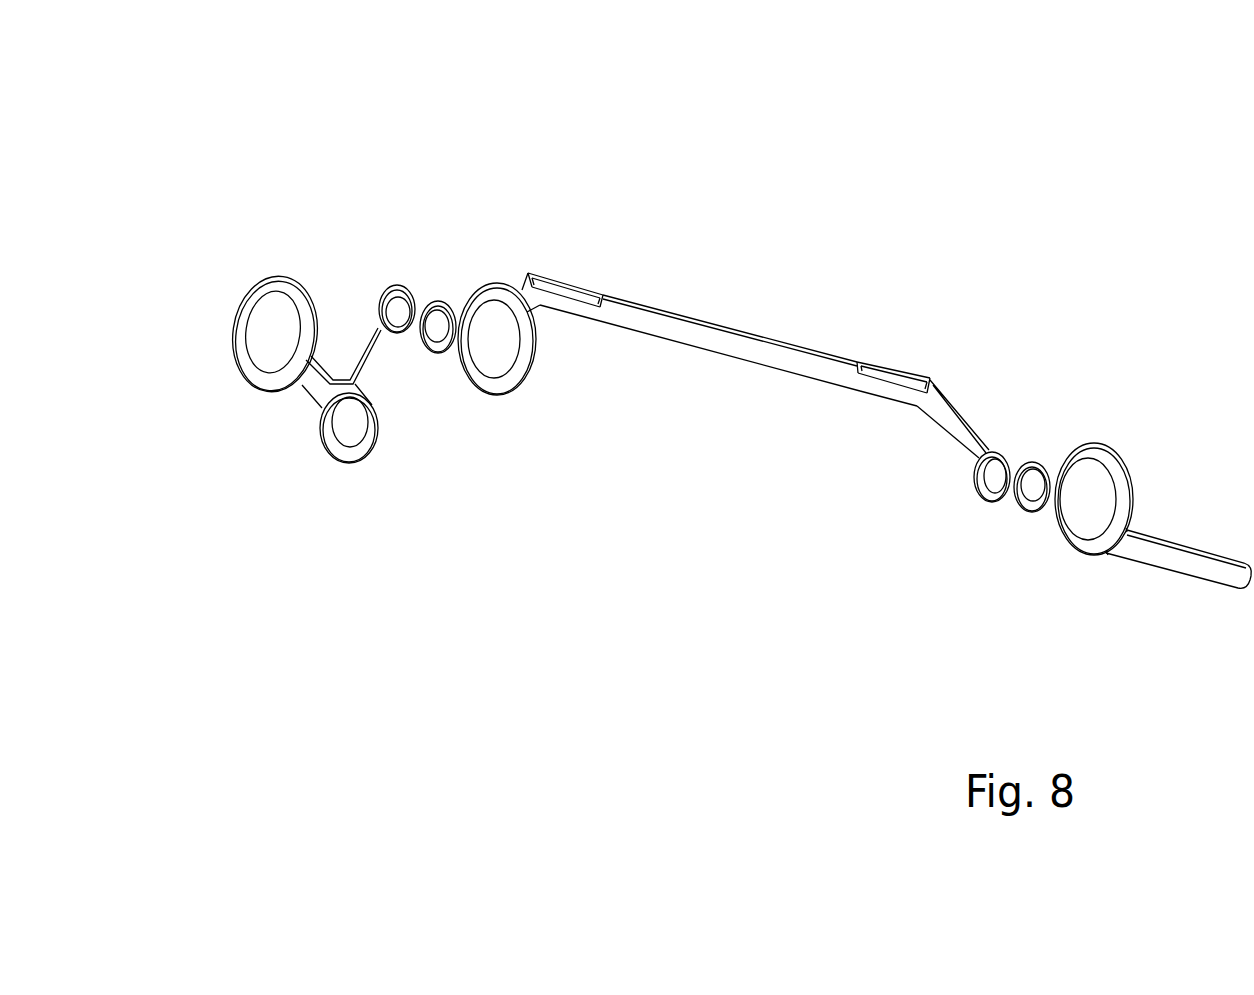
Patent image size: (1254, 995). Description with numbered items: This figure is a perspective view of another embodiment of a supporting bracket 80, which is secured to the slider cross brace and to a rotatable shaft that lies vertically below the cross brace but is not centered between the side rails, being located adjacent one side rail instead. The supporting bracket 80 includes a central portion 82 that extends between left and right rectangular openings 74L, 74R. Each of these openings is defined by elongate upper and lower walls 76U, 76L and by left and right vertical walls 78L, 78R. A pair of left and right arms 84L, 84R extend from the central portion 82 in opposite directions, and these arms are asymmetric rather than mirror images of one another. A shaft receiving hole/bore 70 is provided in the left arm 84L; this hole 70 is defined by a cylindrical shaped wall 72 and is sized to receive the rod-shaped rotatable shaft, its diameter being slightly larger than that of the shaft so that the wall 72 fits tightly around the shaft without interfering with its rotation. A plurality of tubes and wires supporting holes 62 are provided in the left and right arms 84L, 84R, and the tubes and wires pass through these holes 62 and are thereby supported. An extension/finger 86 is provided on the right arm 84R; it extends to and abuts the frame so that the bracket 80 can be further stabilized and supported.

The tubes and wires supporting holes 62 is at (277, 317).
The shaft receiving hole/bore 70 is at (350, 437).
The cylindrical shaped wall 72 is at (333, 420).
The left rectangular opening 74L is at (570, 299).
The right rectangular opening 74R is at (897, 387).
The lower wall 76L is at (553, 298).
The upper wall 76U is at (590, 296).
The left vertical wall 78L is at (530, 273).
The right vertical wall 78R is at (598, 305).
The supporting bracket 80 is at (952, 377).
The central portion 82 is at (758, 345).
The left arm 84L is at (315, 383).
The right arm 84R is at (1120, 548).
The extension/finger 86 is at (1212, 567).